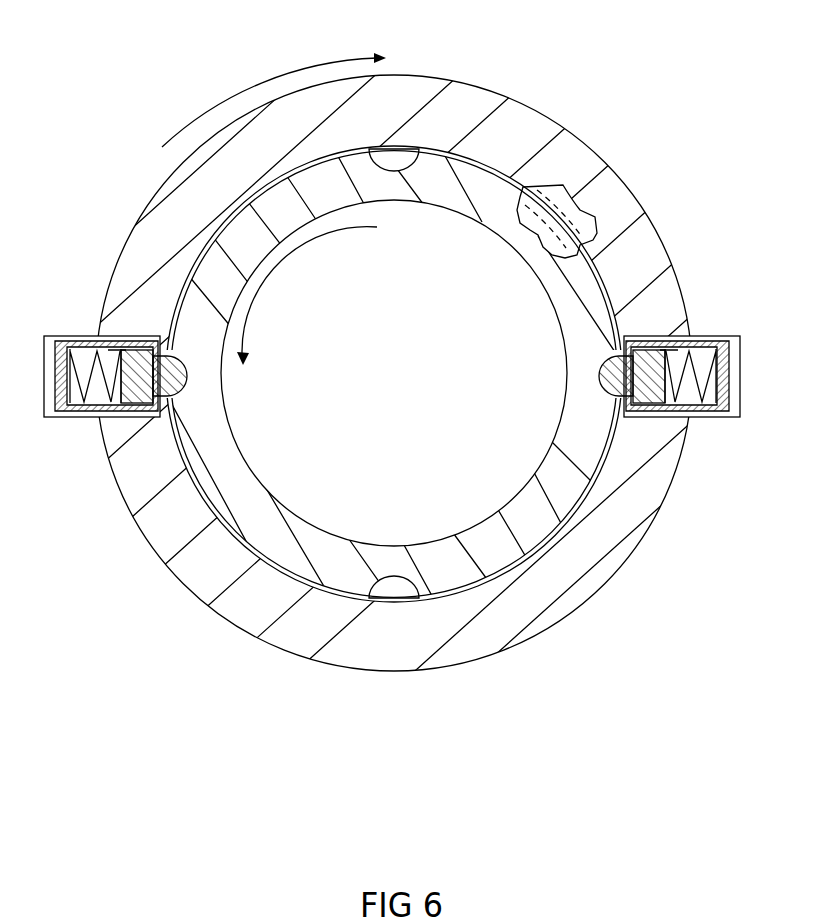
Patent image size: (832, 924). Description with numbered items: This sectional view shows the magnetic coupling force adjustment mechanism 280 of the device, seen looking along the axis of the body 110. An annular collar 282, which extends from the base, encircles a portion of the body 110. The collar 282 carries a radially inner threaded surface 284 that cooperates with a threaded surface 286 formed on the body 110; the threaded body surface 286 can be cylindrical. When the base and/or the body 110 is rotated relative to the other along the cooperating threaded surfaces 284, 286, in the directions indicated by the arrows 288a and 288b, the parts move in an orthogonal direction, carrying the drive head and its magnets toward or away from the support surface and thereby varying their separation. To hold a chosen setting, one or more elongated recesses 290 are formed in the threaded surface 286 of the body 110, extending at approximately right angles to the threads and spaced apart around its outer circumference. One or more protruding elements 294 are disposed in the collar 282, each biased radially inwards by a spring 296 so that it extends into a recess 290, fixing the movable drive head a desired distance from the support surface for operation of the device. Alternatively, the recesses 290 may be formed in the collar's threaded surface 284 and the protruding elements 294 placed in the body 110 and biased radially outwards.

The body 110 is at (557, 312).
The adjustment mechanism 280 is at (597, 101).
The annular collar 282 is at (665, 246).
The radially inner threaded surface 284 is at (588, 482).
The threaded surface 286 is at (556, 521).
The arrow 288a is at (285, 267).
The arrow 288b is at (292, 62).
The elongated recesses 290 is at (172, 400).
The protruding elements 294 is at (624, 408).
The spring 296 is at (710, 412).